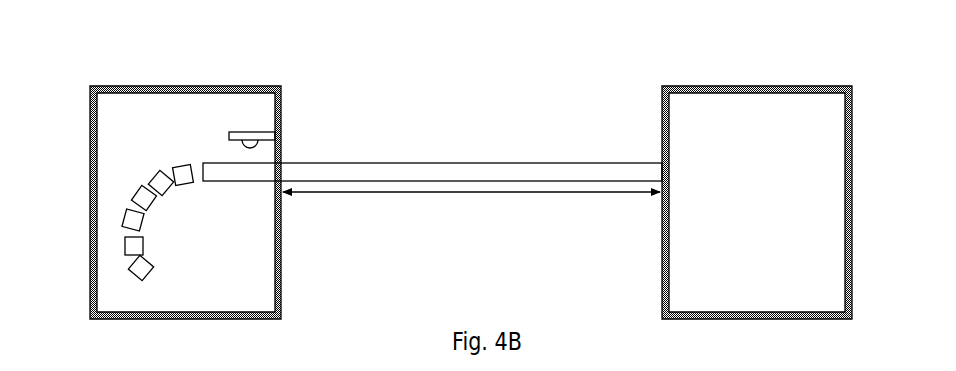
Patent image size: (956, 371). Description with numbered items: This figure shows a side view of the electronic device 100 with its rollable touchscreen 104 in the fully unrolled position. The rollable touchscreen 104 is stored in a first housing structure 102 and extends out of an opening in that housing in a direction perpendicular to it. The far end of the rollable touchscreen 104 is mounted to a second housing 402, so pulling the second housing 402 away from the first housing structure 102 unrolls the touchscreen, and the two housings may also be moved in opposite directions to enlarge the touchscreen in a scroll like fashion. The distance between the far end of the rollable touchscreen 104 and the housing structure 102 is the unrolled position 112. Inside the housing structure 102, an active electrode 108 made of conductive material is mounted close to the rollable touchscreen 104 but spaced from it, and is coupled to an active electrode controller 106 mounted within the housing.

The electronic device 100 is at (230, 50).
The housing structure 102 is at (90, 175).
The rollable touchscreen 104 is at (262, 180).
The active electrode controller 106 is at (268, 130).
The active electrode 108 is at (258, 143).
The unrolled position 112 is at (372, 193).
The second housing 402 is at (662, 95).